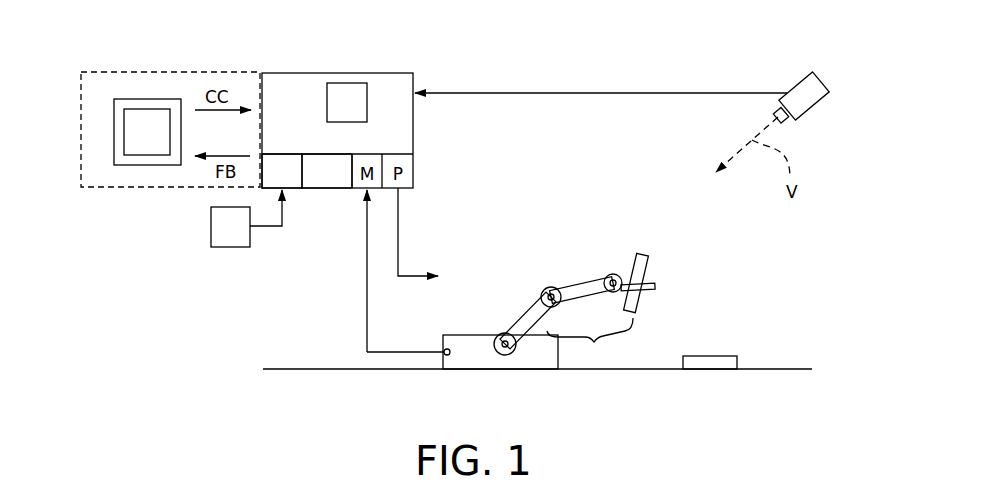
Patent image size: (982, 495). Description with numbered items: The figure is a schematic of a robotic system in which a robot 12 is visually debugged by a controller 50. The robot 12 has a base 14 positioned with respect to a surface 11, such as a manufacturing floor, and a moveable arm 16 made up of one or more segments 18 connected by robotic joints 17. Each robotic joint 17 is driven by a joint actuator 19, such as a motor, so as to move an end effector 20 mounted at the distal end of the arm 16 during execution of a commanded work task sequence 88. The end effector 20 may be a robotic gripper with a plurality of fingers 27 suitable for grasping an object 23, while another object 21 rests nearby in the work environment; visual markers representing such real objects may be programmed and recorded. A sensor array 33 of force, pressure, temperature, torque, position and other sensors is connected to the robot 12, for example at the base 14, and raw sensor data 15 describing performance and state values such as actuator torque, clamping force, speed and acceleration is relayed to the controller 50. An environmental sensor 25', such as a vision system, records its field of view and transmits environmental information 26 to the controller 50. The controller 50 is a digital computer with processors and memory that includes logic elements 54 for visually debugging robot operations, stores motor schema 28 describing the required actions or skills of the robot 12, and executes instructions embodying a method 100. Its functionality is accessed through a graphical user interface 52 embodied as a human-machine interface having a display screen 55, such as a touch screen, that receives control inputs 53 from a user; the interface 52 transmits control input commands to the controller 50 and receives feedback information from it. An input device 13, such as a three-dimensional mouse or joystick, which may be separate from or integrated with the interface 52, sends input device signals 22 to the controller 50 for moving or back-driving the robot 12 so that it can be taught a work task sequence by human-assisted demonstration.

The surface 11 is at (808, 366).
The robot 12 is at (522, 196).
The input device 13 is at (230, 227).
The base 14 is at (500, 352).
The raw sensor data 15 is at (367, 272).
The moveable arm 16 is at (590, 341).
The robotic joint 17 is at (592, 280).
The arm segment 18 is at (582, 290).
The joint actuator 19 is at (547, 288).
The end effector 20 is at (695, 260).
The object 21 is at (718, 356).
The input device signals 22 is at (268, 226).
The object 23 is at (641, 257).
The camera 25' is at (822, 111).
The environmental information 26 is at (612, 93).
The fingers 27 is at (655, 286).
The motor schema 28 is at (282, 171).
The sensor array 33 is at (446, 372).
The controller 50 is at (337, 130).
The graphical user interface 52 is at (147, 165).
The control inputs 53 is at (70, 129).
The logic elements 54 is at (347, 102).
The display screen 55 is at (147, 109).
The commanded work task sequence 88 is at (398, 240).
The method 100 is at (327, 171).